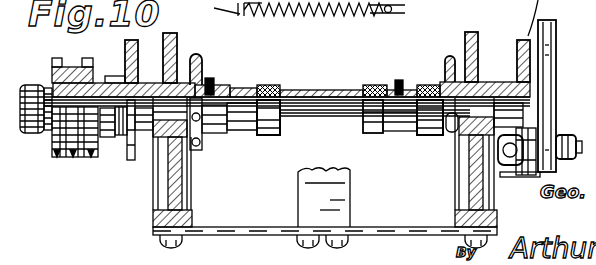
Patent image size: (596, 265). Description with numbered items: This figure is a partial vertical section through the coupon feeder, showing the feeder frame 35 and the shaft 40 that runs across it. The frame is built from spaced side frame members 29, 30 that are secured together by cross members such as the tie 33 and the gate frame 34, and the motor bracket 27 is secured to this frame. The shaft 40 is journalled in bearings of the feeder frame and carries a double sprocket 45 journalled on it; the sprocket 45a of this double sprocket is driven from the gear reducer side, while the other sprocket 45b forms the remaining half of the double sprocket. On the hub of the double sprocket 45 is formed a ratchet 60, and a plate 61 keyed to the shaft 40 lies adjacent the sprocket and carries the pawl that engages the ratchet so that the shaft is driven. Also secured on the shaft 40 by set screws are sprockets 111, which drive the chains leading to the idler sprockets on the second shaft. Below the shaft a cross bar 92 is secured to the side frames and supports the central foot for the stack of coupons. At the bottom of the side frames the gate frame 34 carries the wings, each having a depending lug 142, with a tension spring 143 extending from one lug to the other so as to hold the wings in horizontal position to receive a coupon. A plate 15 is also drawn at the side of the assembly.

The tie 33 is at (399, 228).
The feeder frame 35 is at (200, 199).
The side frame member 30 is at (176, 50).
The sprocket 111 is at (203, 63).
The side frame member 29 is at (480, 52).
The plate 15 is at (555, 58).
The shaft 40 is at (328, 105).
The double sprocket 45 is at (78, 157).
The sprocket 45a is at (58, 152).
The gear collar 45b is at (92, 157).
The ratchet 60 is at (115, 140).
The plate 61 is at (131, 162).
The cross bar 92 is at (340, 182).
The motor bracket 27 is at (312, 17).
The tension spring 143 is at (333, 17).
The depending lug 142 is at (260, 17).
The gate frame 34 is at (216, 7).